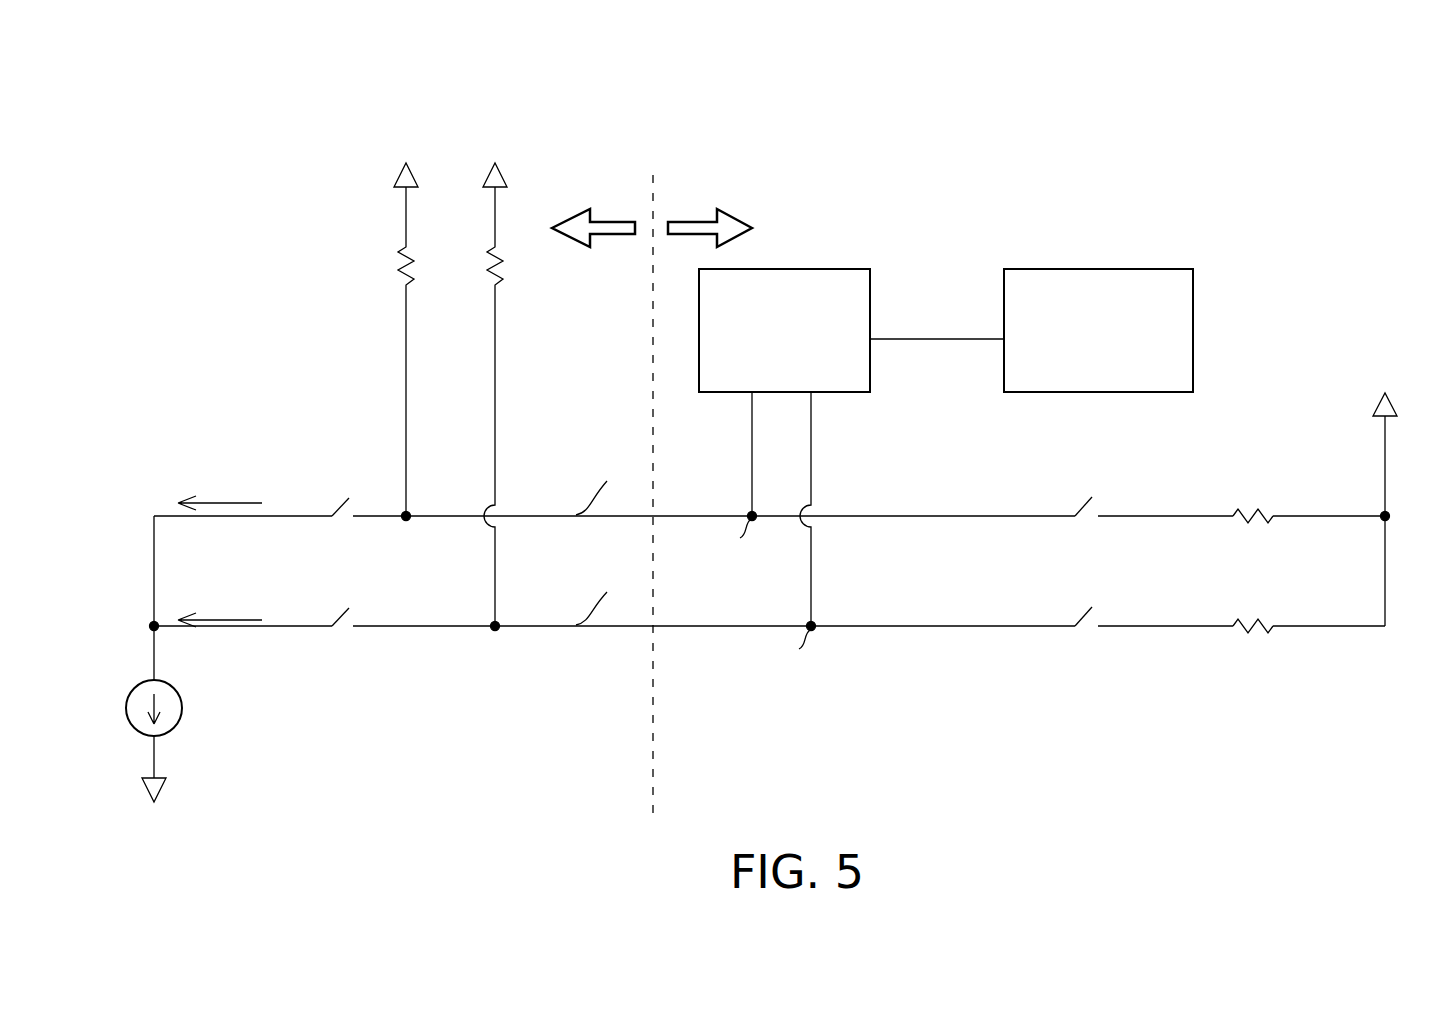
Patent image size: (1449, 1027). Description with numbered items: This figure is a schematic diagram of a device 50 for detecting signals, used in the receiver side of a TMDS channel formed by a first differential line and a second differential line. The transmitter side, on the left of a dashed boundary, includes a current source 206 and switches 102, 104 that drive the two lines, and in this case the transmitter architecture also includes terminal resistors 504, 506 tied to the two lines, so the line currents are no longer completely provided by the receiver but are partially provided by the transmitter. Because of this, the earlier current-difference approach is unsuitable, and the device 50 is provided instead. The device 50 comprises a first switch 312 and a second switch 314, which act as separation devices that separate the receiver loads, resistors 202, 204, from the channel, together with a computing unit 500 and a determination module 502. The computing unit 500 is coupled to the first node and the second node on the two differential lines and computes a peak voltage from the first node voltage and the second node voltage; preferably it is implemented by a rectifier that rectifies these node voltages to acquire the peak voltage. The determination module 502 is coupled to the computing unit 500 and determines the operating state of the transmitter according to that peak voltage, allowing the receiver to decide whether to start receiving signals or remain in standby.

The device for detecting signals 50 is at (1329, 153).
The switch 102 is at (336, 495).
The switch 104 is at (336, 606).
The current source 206 is at (183, 708).
The terminal resistor 504 is at (400, 263).
The terminal resistor 506 is at (490, 265).
The computing unit 500 is at (829, 268).
The determination module 502 is at (1105, 268).
The first switch 312 is at (1078, 496).
The second switch 314 is at (1078, 606).
The resistor 202 is at (1245, 510).
The resistor 204 is at (1245, 620).